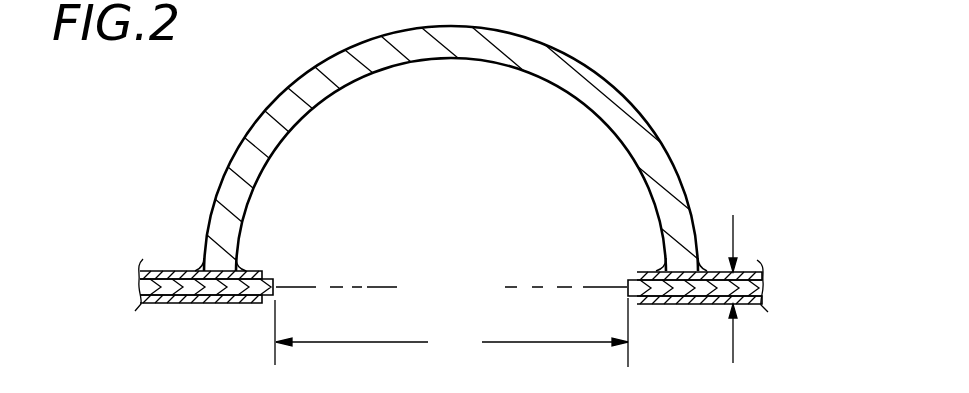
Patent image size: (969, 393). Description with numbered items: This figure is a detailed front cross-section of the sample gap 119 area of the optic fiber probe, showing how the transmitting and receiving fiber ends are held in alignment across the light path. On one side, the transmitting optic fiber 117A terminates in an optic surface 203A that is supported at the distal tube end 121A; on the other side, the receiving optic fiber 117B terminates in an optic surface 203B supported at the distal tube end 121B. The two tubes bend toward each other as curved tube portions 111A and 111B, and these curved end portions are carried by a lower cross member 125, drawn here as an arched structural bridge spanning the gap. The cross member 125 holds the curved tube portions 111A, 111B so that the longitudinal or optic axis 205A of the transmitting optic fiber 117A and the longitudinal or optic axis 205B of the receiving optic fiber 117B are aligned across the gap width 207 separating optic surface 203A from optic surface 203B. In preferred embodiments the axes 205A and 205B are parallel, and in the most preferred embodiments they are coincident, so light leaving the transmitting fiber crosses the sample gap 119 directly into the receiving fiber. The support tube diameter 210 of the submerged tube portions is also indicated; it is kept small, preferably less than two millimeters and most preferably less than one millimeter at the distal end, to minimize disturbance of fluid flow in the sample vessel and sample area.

The lower cross member 125 is at (614, 88).
The curved tube portion 111A is at (185, 303).
The curved tube portion 111B is at (717, 305).
The transmitting optic fiber 117A is at (207, 303).
The receiving optic fiber 117B is at (688, 305).
The distal tube end 121A is at (268, 298).
The distal tube end 121B is at (632, 298).
The optic surface 203A is at (278, 282).
The optic surface 203B is at (627, 282).
The longitudinal or optic axis 205A is at (368, 287).
The longitudinal or optic axis 205B is at (533, 287).
The gap width 207 is at (451, 332).
The sample gap 119 is at (473, 295).
The support tube diameter 210 is at (733, 233).